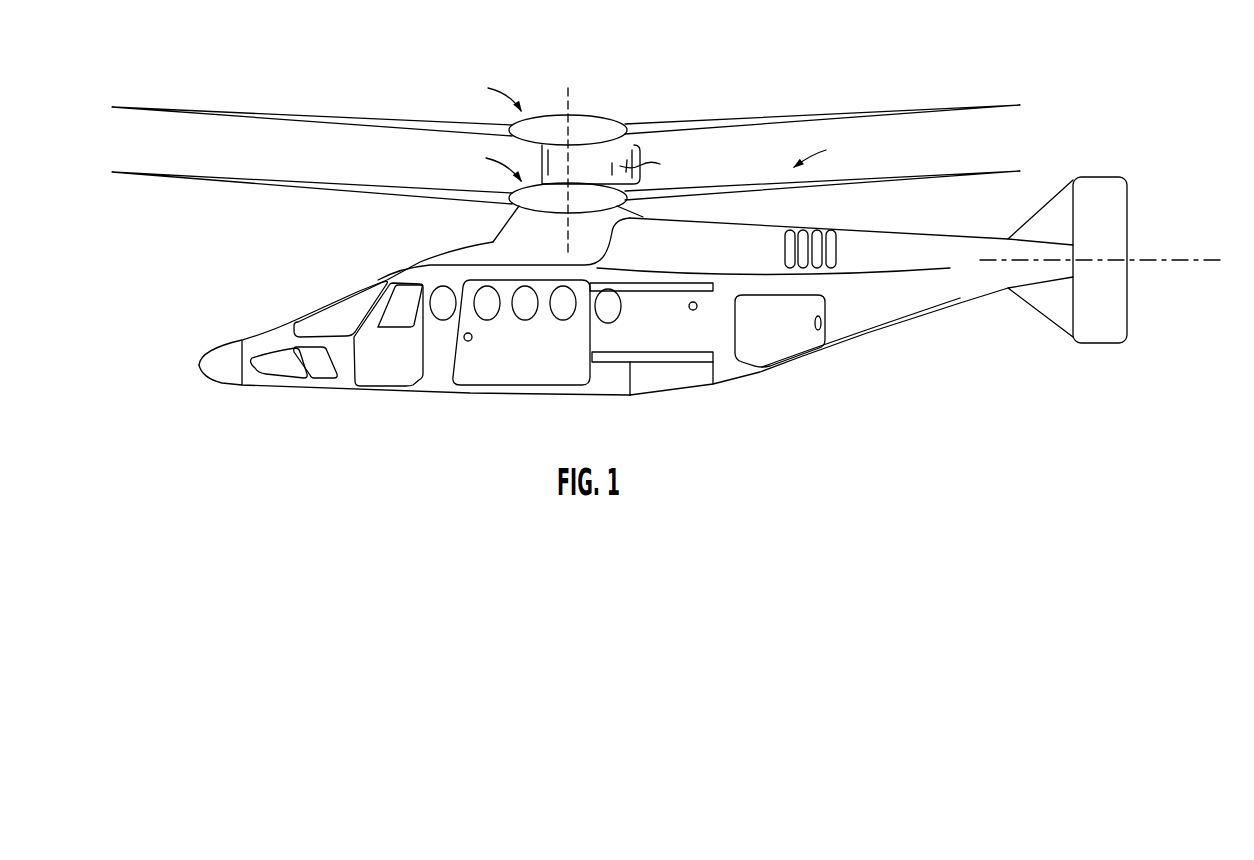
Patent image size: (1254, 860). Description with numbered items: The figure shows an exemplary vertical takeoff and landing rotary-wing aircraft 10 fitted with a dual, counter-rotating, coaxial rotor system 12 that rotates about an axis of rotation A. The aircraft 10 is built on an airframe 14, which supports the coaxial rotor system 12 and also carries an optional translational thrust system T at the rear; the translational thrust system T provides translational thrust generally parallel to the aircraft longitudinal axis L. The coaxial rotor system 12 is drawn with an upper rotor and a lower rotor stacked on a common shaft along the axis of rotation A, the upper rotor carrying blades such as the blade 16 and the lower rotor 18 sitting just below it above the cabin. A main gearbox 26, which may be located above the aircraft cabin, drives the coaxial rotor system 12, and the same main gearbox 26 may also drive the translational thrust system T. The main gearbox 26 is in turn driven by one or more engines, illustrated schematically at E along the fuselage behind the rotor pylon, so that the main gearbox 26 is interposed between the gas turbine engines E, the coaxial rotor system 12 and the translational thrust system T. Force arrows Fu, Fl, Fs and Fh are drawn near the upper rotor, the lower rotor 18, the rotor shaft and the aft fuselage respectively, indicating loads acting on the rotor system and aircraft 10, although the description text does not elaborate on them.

The rotary-wing aircraft 10 is at (730, 31).
The coaxial rotor system 12 is at (604, 111).
The airframe 14 is at (413, 262).
The rotor blade 16 is at (628, 119).
The lower rotor 18 is at (506, 208).
The main gearbox 26 is at (551, 250).
The axis of rotation A is at (577, 97).
The engine E is at (713, 262).
The translational thrust system T is at (1115, 145).
The aircraft longitudinal axis L is at (1165, 263).
The upper rotor force Fu is at (492, 89).
The lower rotor force Fl is at (492, 162).
The shaft force Fs is at (651, 166).
The horizontal force Fh is at (822, 152).